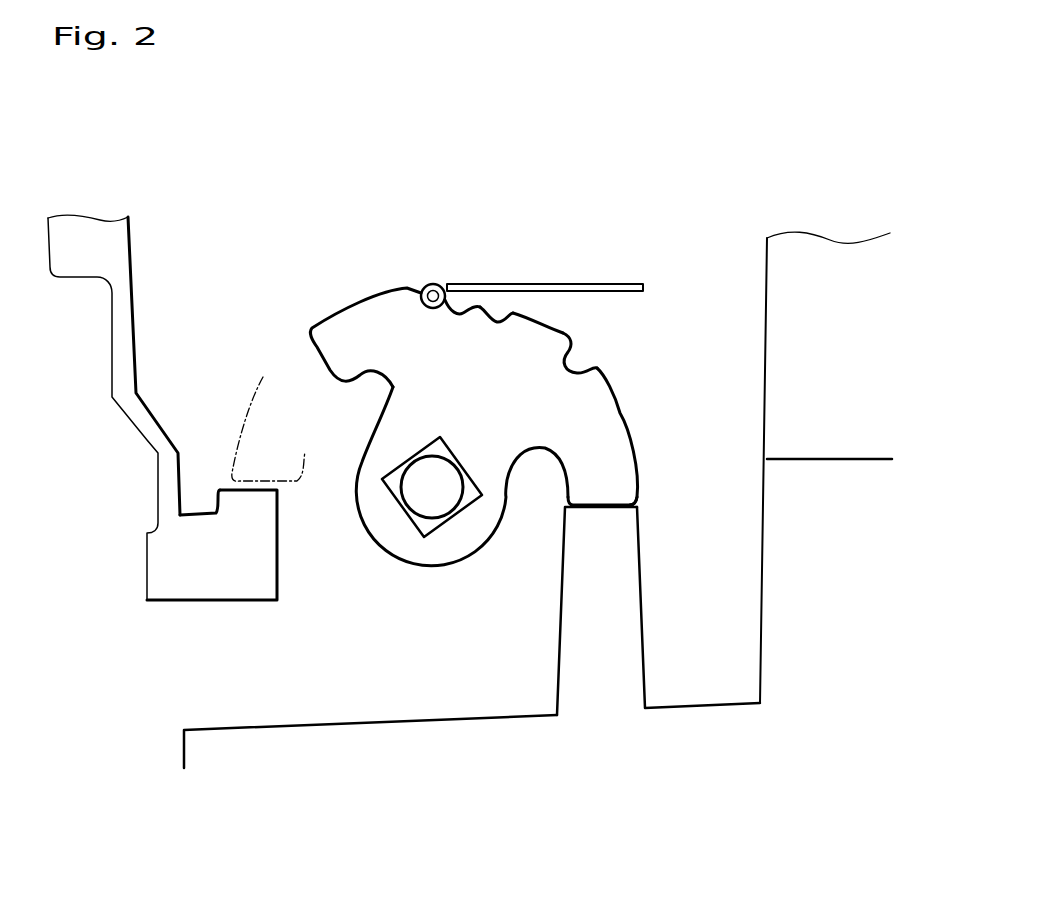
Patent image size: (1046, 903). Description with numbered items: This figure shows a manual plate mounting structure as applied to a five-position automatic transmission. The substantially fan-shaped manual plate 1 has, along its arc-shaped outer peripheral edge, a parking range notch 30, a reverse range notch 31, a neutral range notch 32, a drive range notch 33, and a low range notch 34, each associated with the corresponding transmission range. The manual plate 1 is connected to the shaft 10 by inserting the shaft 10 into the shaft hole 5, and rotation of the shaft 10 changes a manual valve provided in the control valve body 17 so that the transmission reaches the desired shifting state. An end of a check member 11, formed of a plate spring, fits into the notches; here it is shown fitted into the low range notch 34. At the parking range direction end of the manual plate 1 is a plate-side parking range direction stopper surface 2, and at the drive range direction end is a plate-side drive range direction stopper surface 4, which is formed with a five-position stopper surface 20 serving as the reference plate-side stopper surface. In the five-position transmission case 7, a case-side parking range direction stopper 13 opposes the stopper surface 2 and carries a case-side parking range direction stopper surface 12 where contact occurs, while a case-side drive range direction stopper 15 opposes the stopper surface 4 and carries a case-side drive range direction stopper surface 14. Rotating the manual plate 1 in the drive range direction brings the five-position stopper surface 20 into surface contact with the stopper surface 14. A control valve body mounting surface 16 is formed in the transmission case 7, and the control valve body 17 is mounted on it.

The manual plate 1 is at (620, 397).
The plate-side parking range direction stopper surface 2 is at (318, 350).
The plate-side drive range direction stopper surface 4 is at (583, 509).
The shaft hole 5 is at (458, 517).
The 5-position transmission case 7 is at (145, 567).
The shaft 10 is at (435, 527).
The check member 11 is at (540, 280).
The case-side parking range direction stopper surface 12 is at (227, 483).
The case-side parking range direction stopper 13 is at (238, 577).
The case-side drive range direction stopper surface 14 is at (607, 503).
The case-side drive range direction stopper 15 is at (617, 622).
The control valve body mounting surface 16 is at (807, 458).
The control valve body 17 is at (783, 272).
The 5-position stopper surface 20 is at (625, 508).
The parking range notch 30 is at (575, 366).
The reverse range notch 31 is at (515, 327).
The neutral range notch 32 is at (495, 318).
The drive range notch 33 is at (463, 312).
The low range notch 34 is at (428, 285).